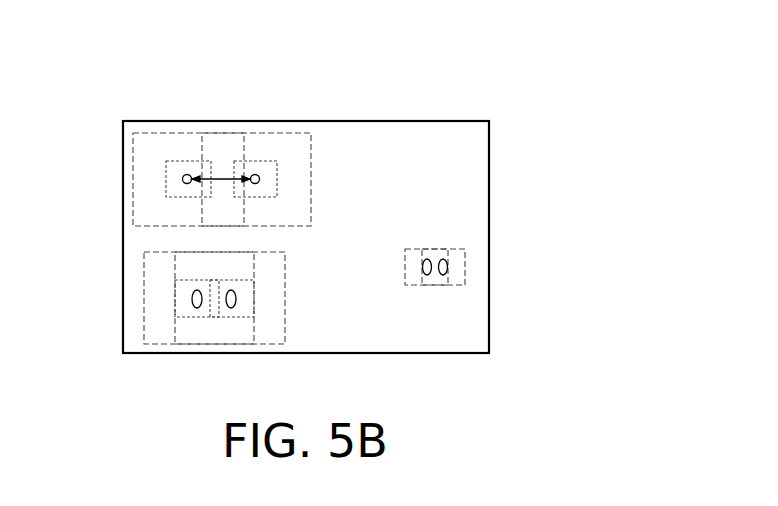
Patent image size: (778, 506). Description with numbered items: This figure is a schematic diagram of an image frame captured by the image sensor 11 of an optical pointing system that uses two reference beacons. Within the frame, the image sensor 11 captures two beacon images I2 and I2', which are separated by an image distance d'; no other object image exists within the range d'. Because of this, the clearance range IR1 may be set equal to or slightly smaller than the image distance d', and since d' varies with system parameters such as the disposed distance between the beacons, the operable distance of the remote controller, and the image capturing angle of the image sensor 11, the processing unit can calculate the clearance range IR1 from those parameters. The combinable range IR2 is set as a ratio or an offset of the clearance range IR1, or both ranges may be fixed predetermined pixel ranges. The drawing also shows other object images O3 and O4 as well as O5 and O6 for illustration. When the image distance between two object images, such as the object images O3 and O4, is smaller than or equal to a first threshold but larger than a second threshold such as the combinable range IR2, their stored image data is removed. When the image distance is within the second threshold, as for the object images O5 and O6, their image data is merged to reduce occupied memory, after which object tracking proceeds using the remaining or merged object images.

The image sensor 11 is at (455, 68).
The clearance range IR1 is at (134, 190).
The combinable range IR2 is at (167, 167).
The beacon image I2 is at (173, 117).
The beacon image I2' is at (265, 117).
The image distance d' is at (221, 166).
The object image O3 is at (197, 308).
The object image O4 is at (231, 308).
The object image O5 is at (427, 275).
The object image O6 is at (443, 275).